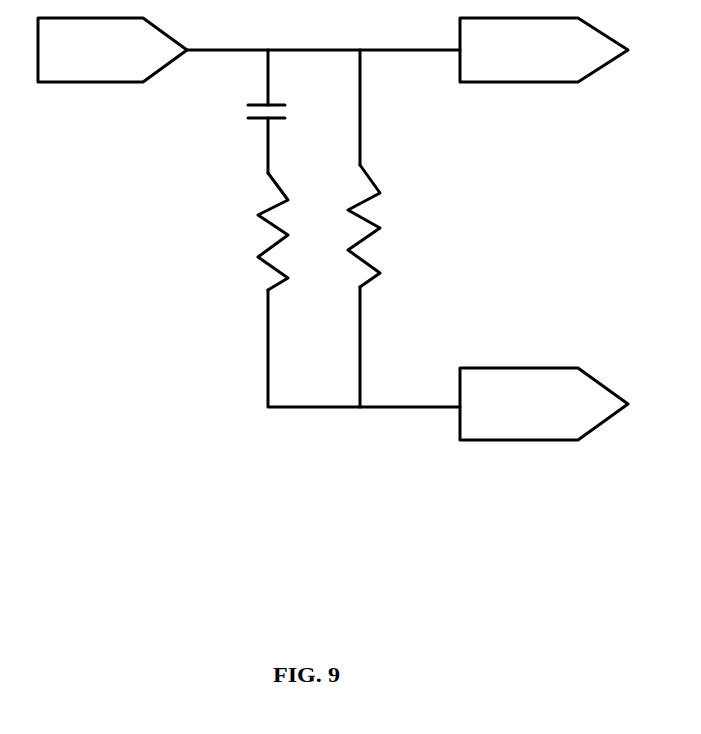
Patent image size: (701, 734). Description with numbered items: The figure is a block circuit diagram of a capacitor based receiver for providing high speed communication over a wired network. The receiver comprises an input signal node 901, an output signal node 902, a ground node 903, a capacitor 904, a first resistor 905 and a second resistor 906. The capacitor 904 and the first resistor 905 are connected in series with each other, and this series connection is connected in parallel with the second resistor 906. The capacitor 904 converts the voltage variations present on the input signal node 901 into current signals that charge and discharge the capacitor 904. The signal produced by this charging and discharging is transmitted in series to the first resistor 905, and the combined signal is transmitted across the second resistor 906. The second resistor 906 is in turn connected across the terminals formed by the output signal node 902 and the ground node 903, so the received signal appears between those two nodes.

The input signal node (Rx_in) 901 is at (73, 82).
The output signal node (Rx_out) 902 is at (528, 82).
The ground node (Rx_Vss) 903 is at (518, 440).
The capacitor (C1) 904 is at (247, 118).
The resistor (R1) 905 is at (262, 250).
The resistor (R2) 906 is at (363, 234).